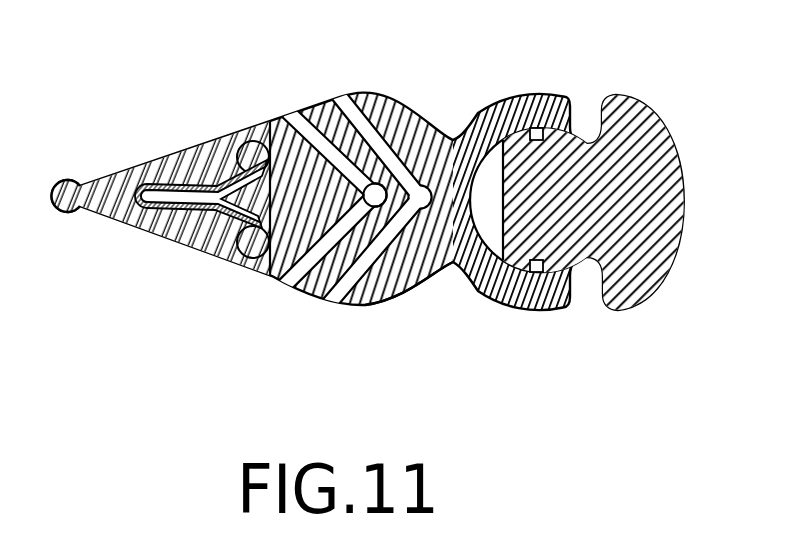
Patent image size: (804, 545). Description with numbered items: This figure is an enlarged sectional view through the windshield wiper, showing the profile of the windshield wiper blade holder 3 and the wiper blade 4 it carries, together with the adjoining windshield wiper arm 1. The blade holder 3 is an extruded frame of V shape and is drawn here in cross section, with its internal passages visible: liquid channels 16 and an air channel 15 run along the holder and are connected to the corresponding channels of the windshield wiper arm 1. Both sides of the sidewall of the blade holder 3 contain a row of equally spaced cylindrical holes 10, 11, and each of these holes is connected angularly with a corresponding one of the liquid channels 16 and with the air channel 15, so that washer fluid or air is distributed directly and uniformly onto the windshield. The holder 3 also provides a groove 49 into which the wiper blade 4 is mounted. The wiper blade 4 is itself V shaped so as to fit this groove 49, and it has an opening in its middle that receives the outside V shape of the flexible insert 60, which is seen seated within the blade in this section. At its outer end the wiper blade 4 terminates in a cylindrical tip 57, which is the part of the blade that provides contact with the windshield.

The windshield wiper arm 1 is at (627, 96).
The windshield wiper blade holder 3 is at (364, 95).
The wiper blade 4 is at (161, 214).
The cylindrical hole 10 is at (330, 286).
The cylindrical hole 11 is at (293, 286).
The air channel 15 is at (440, 264).
The liquid channel 16 is at (377, 203).
The groove 49 is at (220, 236).
The cylindrical tip 57 is at (60, 212).
The flexible insert 60 is at (146, 170).